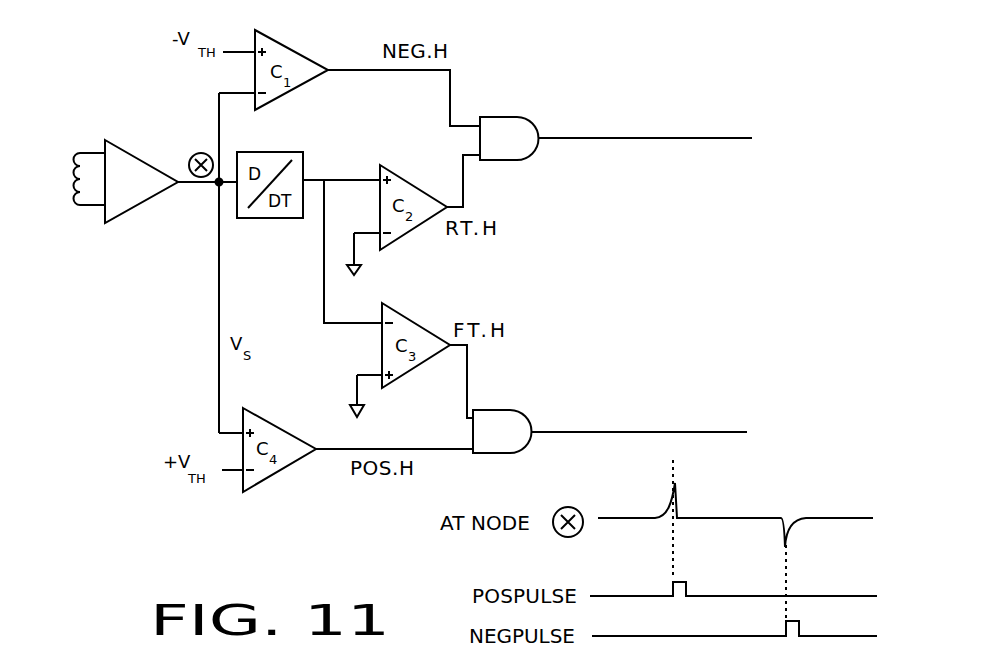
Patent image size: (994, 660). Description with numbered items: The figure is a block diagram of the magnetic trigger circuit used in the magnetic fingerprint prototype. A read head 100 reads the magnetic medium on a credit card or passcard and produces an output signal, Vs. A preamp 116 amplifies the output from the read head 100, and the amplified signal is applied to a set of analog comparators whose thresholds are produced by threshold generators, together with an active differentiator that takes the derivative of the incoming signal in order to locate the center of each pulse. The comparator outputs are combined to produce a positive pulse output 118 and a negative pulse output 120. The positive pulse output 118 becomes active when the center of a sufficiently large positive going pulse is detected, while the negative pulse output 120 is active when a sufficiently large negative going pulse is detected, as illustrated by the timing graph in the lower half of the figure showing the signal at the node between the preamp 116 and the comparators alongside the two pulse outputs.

The read head 100 is at (70, 134).
The preamp 116 is at (150, 220).
The positive pulse output 118 is at (621, 427).
The negative pulse output 120 is at (616, 129).